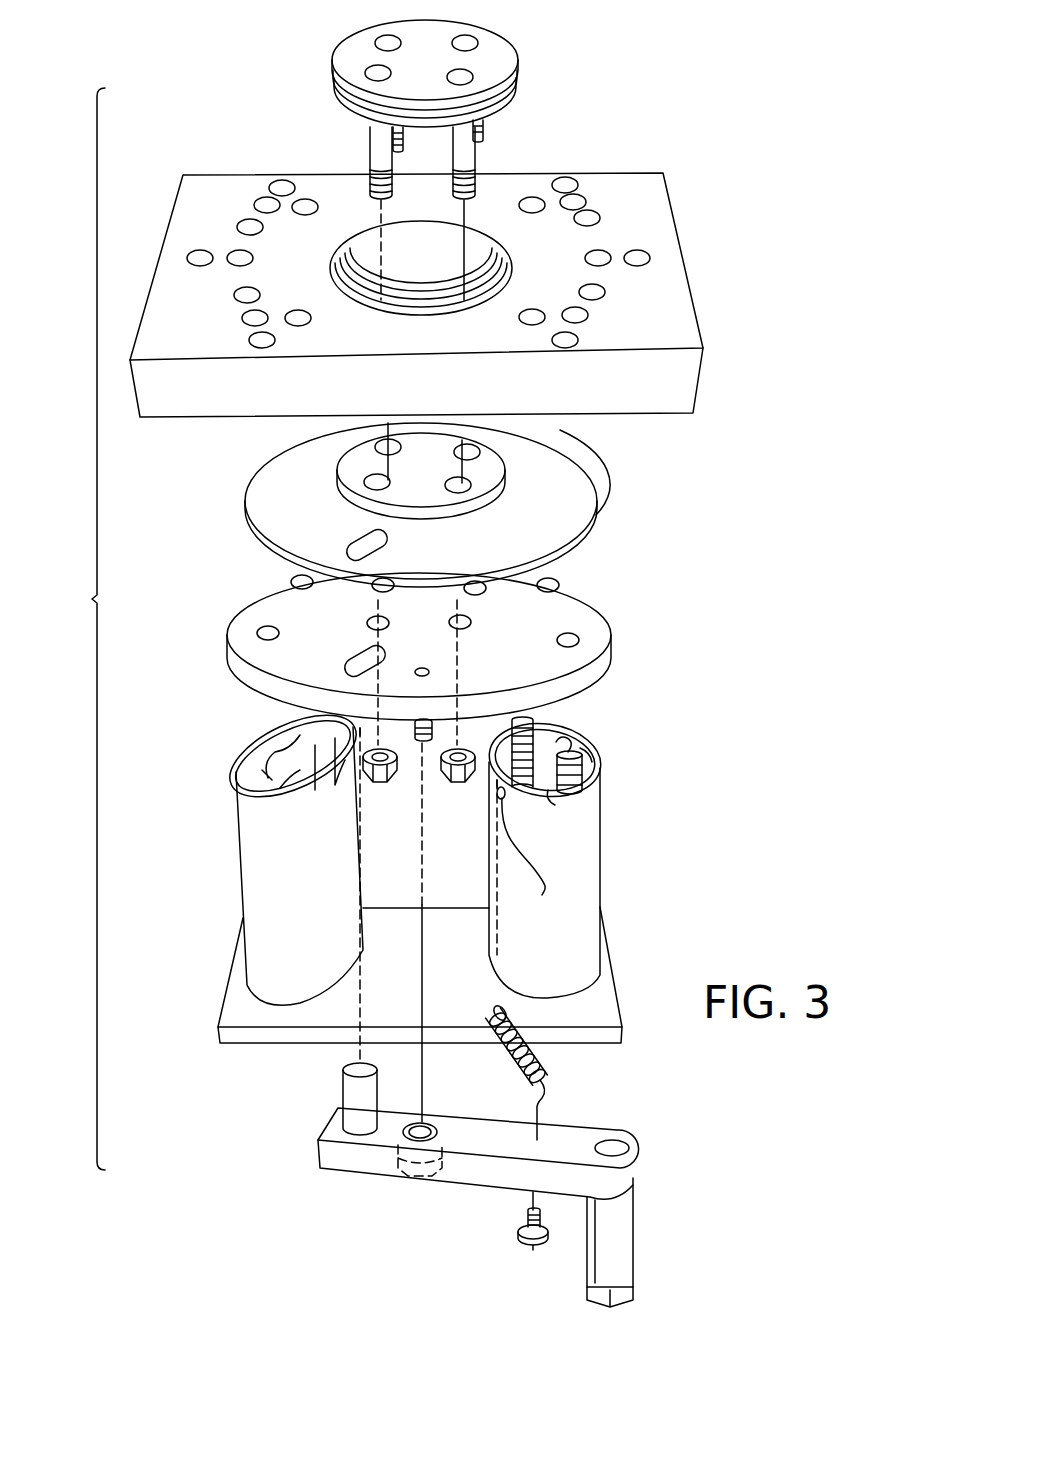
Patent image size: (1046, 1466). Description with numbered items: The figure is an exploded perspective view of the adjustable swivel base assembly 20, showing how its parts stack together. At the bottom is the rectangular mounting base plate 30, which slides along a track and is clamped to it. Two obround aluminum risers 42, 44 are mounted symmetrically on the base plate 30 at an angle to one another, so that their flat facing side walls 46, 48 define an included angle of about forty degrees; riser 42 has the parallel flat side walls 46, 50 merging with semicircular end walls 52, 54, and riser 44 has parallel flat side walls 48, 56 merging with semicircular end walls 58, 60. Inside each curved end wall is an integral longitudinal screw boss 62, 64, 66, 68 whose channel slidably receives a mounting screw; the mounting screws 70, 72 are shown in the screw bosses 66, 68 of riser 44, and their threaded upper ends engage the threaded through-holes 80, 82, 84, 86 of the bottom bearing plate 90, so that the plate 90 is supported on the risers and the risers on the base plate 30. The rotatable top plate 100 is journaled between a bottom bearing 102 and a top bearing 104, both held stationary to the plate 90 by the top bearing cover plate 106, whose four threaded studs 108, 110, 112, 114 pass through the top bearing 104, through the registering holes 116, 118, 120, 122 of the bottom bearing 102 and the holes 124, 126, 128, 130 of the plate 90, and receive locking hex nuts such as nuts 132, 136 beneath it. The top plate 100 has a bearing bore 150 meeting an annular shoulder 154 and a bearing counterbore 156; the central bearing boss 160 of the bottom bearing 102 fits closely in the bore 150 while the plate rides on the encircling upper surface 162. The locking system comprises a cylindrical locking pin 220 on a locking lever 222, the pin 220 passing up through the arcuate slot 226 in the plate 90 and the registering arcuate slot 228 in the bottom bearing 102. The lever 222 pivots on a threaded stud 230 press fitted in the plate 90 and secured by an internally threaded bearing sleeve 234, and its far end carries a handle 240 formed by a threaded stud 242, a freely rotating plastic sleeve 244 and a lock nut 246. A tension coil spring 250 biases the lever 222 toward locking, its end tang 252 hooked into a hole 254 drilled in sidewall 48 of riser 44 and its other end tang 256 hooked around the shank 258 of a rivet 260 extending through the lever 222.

The base assembly 20 is at (78, 597).
The mounting base plate 30 is at (218, 984).
The riser 42 is at (244, 851).
The riser 44 is at (601, 830).
The flat side wall 46 is at (343, 867).
The flat side wall 48 is at (497, 863).
The flat side wall 50 is at (251, 740).
The semicircular end wall 52 is at (251, 828).
The semicircular end wall 54 is at (300, 735).
The flat side wall 56 is at (582, 748).
The semicircular end wall 58 is at (593, 842).
The semicircular end wall 60 is at (502, 712).
The screw boss 62 is at (315, 795).
The screw boss 64 is at (336, 770).
The screw boss 66 is at (556, 795).
The screw boss 68 is at (562, 740).
The mounting screw 70 is at (572, 783).
The mounting screw 72 is at (538, 722).
The threaded through-hole 80 is at (572, 636).
The threaded through-hole 82 is at (552, 580).
The threaded through-hole 84 is at (262, 628).
The threaded through-hole 86 is at (298, 578).
The bottom bearing plate 90 is at (220, 613).
The top plate 100 is at (221, 166).
The bottom bearing 102 is at (268, 458).
The top bearing 104 is at (333, 88).
The top bearing cover plate 106 is at (330, 42).
The threaded stud 108 is at (380, 150).
The threaded stud 110 is at (388, 40).
The threaded stud 112 is at (466, 148).
The threaded stud 114 is at (466, 40).
The hole 116 is at (364, 482).
The hole 118 is at (388, 438).
The hole 120 is at (471, 485).
The hole 122 is at (470, 443).
The hole 124 is at (366, 625).
The hole 126 is at (375, 586).
The hole 128 is at (468, 621).
The hole 130 is at (476, 580).
The locking hex nut 132 is at (382, 782).
The locking hex nut 136 is at (460, 782).
The bearing bore 150 is at (398, 250).
The annular shoulder 154 is at (506, 265).
The bearing counterbore 156 is at (484, 242).
The central bearing boss 160 is at (505, 448).
The upper surface 162 is at (580, 510).
The locking pin 220 is at (340, 1098).
The locking lever 222 is at (328, 1174).
The arcuate slot 226 is at (385, 655).
The arcuate slot 228 is at (355, 540).
The threaded stud 230 is at (452, 715).
The bearing sleeve 234 is at (420, 1180).
The handle 240 is at (637, 1209).
The threaded stud 242 is at (618, 1146).
The plastic sleeve 244 is at (620, 1258).
The lock nut 246 is at (607, 1312).
The tension coil spring 250 is at (552, 1066).
The end tang 252 is at (507, 1014).
The hole 254 is at (528, 852).
The end tang 256 is at (548, 1097).
The shank 258 is at (525, 1218).
The rivet 260 is at (533, 1247).